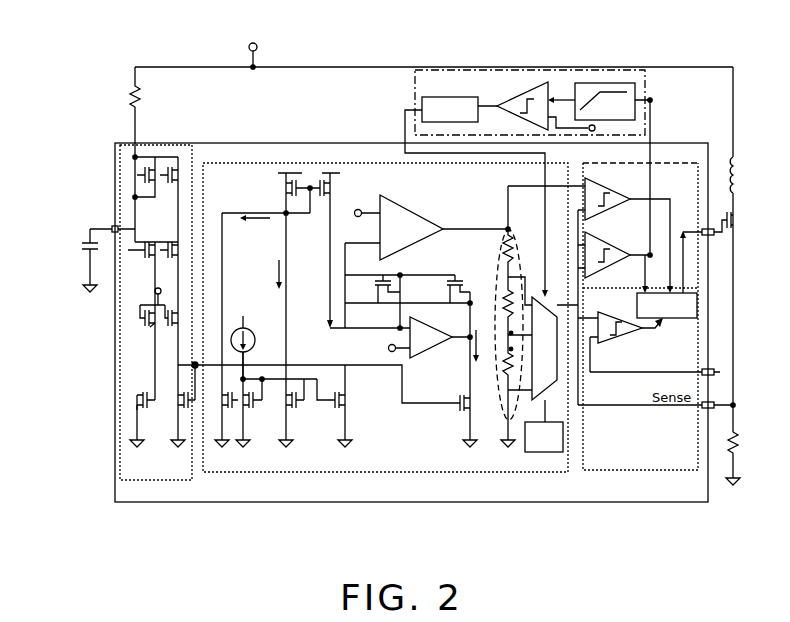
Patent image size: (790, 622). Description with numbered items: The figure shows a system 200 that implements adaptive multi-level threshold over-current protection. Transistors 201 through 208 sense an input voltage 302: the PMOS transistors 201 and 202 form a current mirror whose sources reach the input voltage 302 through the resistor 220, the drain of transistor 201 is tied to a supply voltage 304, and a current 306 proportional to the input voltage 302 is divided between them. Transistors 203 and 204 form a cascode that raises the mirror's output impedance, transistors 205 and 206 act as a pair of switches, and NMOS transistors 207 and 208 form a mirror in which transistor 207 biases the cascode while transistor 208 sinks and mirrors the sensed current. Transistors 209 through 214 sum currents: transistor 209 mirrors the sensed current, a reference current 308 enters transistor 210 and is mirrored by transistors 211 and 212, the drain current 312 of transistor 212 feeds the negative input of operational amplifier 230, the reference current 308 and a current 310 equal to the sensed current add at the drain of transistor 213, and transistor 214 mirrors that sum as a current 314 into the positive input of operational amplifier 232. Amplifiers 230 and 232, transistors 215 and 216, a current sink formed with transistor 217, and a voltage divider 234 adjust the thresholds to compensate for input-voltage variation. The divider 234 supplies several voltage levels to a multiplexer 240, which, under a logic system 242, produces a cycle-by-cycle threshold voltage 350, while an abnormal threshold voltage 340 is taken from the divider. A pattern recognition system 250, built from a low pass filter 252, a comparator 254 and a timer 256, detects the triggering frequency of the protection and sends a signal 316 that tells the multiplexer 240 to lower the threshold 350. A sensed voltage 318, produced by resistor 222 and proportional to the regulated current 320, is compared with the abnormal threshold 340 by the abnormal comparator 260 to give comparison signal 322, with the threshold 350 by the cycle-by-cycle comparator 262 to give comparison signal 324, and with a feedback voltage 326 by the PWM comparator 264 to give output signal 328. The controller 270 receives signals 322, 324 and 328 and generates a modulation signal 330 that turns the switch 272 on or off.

The system 200 is at (41, 42).
The transistor 201 is at (133, 166).
The transistor 202 is at (180, 163).
The transistor 203 is at (127, 250).
The transistor 204 is at (176, 250).
The transistor 205 is at (150, 327).
The transistor 206 is at (195, 364).
The transistor 207 is at (137, 410).
The transistor 208 is at (178, 408).
The transistor 209 is at (220, 408).
The transistor 210 is at (246, 408).
The transistor 211 is at (290, 408).
The transistor 212 is at (345, 404).
The transistor 213 is at (297, 175).
The transistor 214 is at (332, 175).
The transistor 215 is at (408, 297).
The transistor 216 is at (455, 275).
The transistor 217 is at (468, 410).
The resistor 220 is at (135, 96).
The resistor 222 is at (740, 440).
The operational amplifier 230 is at (405, 208).
The operational amplifier 232 is at (430, 349).
The voltage divider 234 is at (512, 240).
The multiplexer 240 is at (550, 395).
The logic system 242 is at (544, 452).
The pattern recognition system 250 is at (422, 70).
The low pass filter 252 is at (600, 83).
The comparator 254 is at (524, 82).
The timer 256 is at (446, 97).
The abnormal comparator 260 is at (602, 220).
The cycle-by-cycle comparator 262 is at (614, 252).
The PWM comparator 264 is at (600, 345).
The controller 270 is at (697, 303).
The switch 272 is at (733, 235).
The input voltage 302 is at (250, 43).
The supply voltage 304 is at (90, 229).
The current 306 is at (135, 127).
The reference current 308 is at (243, 316).
The current 310 is at (222, 212).
The drain current 312 is at (345, 350).
The current 314 is at (330, 272).
The signal 316 is at (546, 166).
The sensed voltage 318 is at (645, 405).
The current 320 is at (735, 336).
The comparison signal 322 is at (672, 204).
The comparison signal 324 is at (644, 276).
The feedback voltage 326 is at (652, 372).
The output signal 328 is at (654, 330).
The modulation signal 330 is at (736, 240).
The abnormal threshold voltage 340 is at (490, 229).
The cycle-by-cycle threshold voltage 350 is at (565, 316).